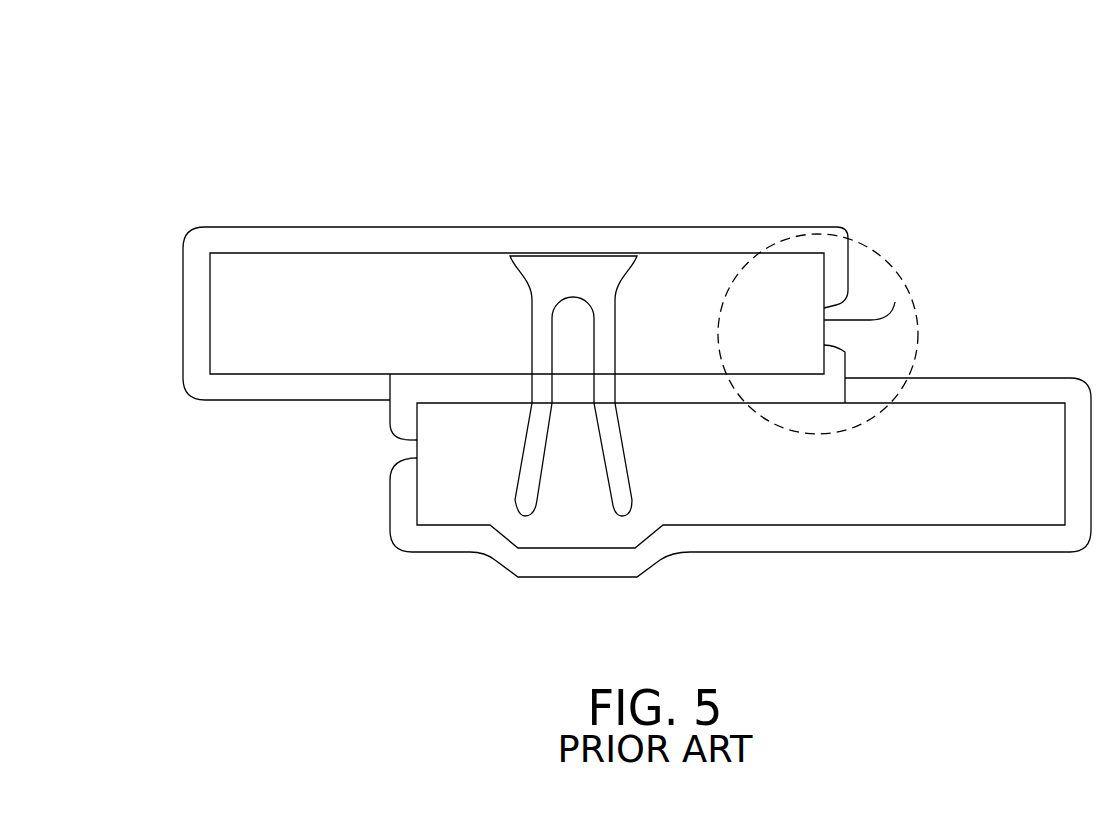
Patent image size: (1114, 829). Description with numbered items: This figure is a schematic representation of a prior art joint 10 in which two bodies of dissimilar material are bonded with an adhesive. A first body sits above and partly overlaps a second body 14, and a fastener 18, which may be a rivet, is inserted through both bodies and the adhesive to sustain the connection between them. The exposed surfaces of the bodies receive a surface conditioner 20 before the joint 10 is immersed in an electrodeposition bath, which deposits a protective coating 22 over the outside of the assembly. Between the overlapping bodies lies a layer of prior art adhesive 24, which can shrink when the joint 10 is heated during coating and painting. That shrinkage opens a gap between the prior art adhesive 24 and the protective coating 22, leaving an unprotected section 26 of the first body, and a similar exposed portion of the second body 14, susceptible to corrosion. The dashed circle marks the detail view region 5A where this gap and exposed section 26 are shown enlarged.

The joint 10 is at (306, 112).
The second body 14 is at (915, 500).
The fastener 18 is at (572, 265).
The surface conditioner 20 is at (677, 268).
The protective coating 22 is at (262, 238).
The prior art adhesive 24 is at (405, 402).
The unprotected section 26 is at (895, 302).
The detail view region 5A is at (888, 260).